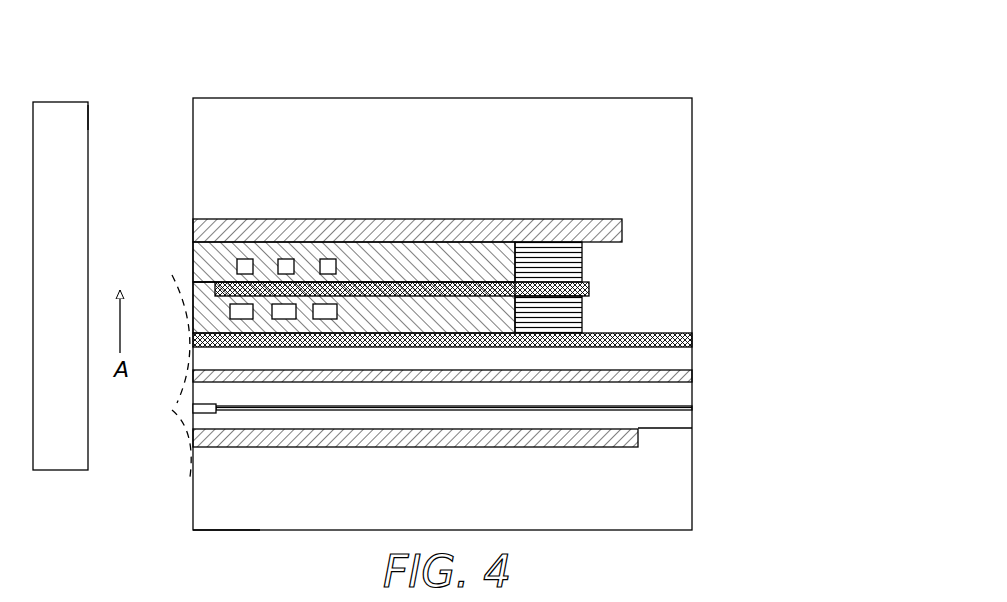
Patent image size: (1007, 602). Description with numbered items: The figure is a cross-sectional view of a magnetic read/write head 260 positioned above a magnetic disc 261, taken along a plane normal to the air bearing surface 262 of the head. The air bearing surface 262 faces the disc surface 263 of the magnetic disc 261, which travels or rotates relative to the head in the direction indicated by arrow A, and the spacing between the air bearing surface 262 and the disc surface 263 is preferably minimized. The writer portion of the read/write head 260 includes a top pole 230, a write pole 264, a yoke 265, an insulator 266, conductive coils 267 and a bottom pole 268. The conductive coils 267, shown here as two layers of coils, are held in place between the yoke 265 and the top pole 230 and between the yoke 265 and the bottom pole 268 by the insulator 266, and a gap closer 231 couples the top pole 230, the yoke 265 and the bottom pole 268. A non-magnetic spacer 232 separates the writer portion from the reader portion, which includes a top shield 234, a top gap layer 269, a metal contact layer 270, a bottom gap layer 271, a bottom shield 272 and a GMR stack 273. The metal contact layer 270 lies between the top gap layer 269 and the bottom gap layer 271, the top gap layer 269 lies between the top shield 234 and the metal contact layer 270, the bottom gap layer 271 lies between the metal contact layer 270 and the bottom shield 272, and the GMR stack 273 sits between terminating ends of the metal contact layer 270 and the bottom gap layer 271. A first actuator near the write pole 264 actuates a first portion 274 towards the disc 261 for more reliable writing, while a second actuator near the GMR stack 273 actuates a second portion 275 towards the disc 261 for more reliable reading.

The magnetic read/write head 260 is at (266, 88).
The magnetic disc 261 is at (80, 297).
The air bearing surface 262 is at (193, 525).
The disc surface 263 is at (88, 120).
The write pole 264 is at (206, 280).
The yoke 265 is at (589, 288).
The insulator 266 is at (440, 262).
The conductive coils 267 is at (242, 304).
The bottom pole 268 is at (692, 340).
The top gap layer 269 is at (692, 393).
The metal contact layer 270 is at (692, 408).
The bottom gap layer 271 is at (692, 418).
The bottom shield 272 is at (638, 438).
The giant magnetoresistive (GMR) stack 273 is at (217, 413).
The first portion 274 is at (177, 273).
The second portion 275 is at (175, 405).
The top pole 230 is at (567, 219).
The gap closer 231 is at (582, 270).
The non-magnetic spacer 232 is at (692, 357).
The top shield 234 is at (692, 375).